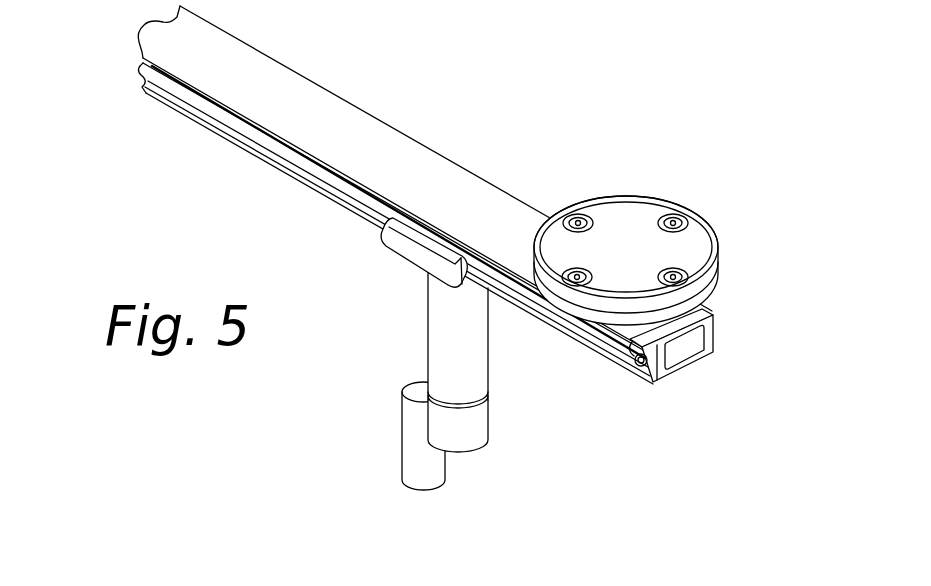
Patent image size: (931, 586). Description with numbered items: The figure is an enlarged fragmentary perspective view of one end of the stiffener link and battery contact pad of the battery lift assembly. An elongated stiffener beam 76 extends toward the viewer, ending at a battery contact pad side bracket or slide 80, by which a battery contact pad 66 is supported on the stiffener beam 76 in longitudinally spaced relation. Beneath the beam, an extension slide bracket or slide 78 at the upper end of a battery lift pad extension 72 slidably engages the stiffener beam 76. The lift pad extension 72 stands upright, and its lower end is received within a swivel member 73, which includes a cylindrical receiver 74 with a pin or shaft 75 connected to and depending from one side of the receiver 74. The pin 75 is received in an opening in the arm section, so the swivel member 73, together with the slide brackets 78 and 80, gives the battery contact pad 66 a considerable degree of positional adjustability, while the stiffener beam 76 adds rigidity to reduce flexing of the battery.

The battery contact pad 66 is at (640, 228).
The battery lift pad extension 72 is at (470, 365).
The swivel member 73 is at (434, 399).
The cylindrical receiver 74 is at (478, 430).
The pin 75 is at (437, 482).
The stiffener beam 76 is at (367, 140).
The extension slide bracket 78 is at (413, 243).
The battery contact pad side bracket 80 is at (617, 335).